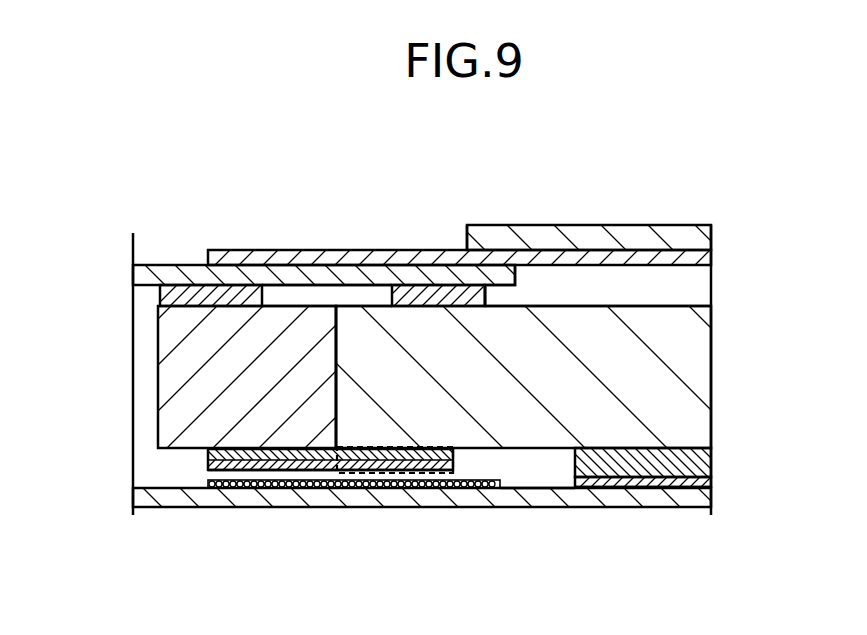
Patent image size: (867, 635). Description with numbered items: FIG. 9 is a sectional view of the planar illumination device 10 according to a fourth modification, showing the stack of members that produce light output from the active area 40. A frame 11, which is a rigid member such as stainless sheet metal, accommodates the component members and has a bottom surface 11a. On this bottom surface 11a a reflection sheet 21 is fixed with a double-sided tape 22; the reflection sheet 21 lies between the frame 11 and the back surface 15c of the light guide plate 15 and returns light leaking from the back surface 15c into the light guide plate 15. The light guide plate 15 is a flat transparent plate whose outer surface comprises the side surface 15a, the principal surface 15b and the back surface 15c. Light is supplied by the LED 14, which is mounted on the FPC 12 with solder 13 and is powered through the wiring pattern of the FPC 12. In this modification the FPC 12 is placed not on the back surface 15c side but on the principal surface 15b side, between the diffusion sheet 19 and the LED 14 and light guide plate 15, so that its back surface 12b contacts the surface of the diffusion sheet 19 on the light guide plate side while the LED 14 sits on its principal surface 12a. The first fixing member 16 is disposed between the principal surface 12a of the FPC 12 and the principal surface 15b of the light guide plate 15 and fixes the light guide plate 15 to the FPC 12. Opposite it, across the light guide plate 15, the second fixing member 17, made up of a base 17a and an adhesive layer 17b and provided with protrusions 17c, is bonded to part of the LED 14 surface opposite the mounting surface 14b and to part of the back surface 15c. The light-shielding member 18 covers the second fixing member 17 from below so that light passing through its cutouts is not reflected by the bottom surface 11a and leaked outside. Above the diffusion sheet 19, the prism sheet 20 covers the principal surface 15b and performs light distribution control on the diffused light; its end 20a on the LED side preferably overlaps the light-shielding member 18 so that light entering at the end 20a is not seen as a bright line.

The planar illumination device 10 is at (536, 159).
The active area 40 is at (636, 219).
The prism sheet 20 is at (682, 240).
The end of the prism sheet 20a is at (483, 242).
The diffusion sheet 19 is at (682, 259).
The solder 13 is at (220, 275).
The mounting surface 14b is at (190, 292).
The FPC 12 is at (338, 275).
The principal surface 12a is at (278, 290).
The back surface 12b is at (385, 262).
The first fixing member 16 is at (438, 293).
The principal surface 15b is at (628, 306).
The LED 14 is at (210, 370).
The light guide plate 15 is at (655, 382).
The side surface 15a is at (340, 328).
The back surface 15c is at (575, 467).
The reflection sheet 21 is at (698, 480).
The frame 11 is at (603, 500).
The bottom surface 11a is at (553, 450).
The double-sided tape 22 is at (698, 489).
The second fixing member 17 is at (70, 442).
The adhesive layer 17b is at (208, 455).
The base 17a is at (205, 468).
The protrusions 17c is at (362, 500).
The light-shielding member 18 is at (440, 488).